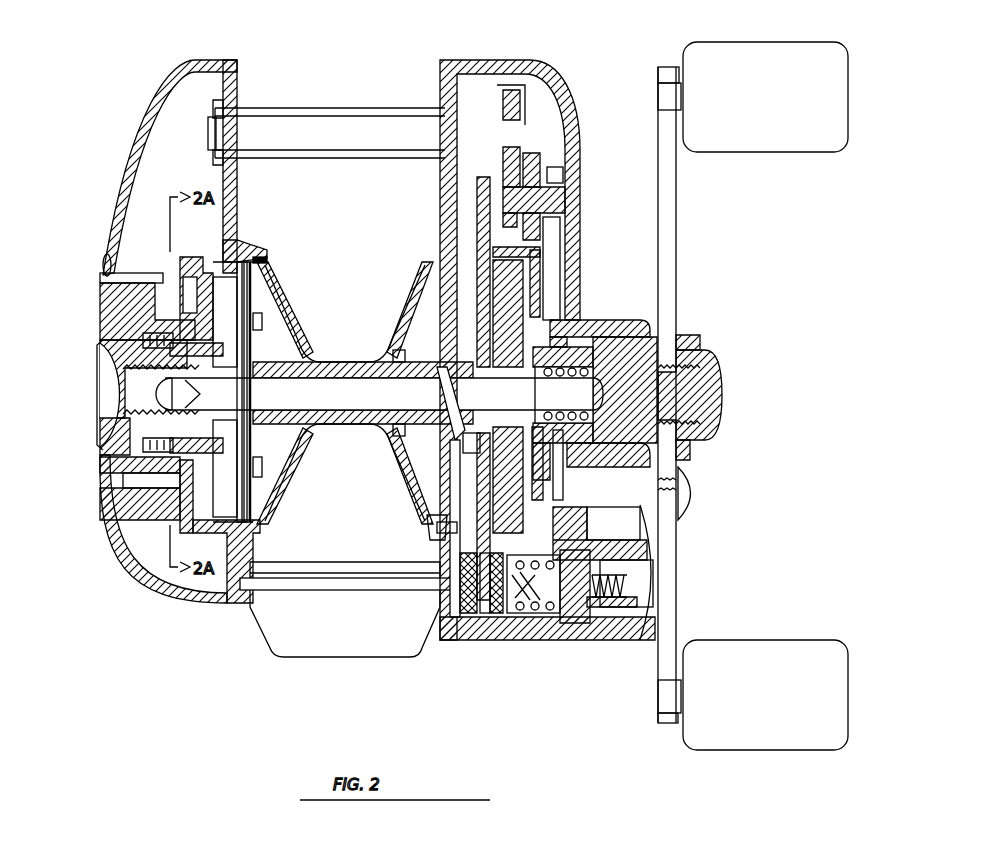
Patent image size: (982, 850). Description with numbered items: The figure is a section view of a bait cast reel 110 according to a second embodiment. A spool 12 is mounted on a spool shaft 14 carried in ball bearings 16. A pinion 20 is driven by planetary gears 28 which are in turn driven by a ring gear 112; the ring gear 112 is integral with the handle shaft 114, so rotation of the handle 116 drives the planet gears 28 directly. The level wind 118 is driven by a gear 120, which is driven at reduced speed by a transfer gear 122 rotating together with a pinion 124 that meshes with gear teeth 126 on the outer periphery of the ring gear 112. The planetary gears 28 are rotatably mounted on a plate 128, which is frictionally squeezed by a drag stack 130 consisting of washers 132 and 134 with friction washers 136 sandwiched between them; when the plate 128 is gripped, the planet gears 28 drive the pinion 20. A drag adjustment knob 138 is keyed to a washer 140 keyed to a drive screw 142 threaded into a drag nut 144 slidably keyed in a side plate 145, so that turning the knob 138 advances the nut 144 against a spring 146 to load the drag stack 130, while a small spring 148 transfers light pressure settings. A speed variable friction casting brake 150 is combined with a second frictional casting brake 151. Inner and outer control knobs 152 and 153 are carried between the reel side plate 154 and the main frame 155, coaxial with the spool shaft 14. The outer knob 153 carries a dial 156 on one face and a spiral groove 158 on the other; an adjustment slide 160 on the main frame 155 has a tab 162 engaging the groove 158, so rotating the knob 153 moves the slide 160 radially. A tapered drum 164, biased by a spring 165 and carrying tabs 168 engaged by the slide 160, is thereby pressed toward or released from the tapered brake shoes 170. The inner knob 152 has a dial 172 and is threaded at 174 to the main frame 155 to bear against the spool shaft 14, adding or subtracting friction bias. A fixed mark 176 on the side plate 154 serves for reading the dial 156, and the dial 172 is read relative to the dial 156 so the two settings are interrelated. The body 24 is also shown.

The bait cast reel 110 is at (205, 618).
The ring gear 112 is at (548, 248).
The handle shaft 114 is at (659, 343).
The handle 116 is at (667, 580).
The level wind 118 is at (322, 110).
The gear 120 is at (520, 92).
The transfer gear 122 is at (503, 222).
The pinion 124 is at (532, 168).
The gear teeth 126 is at (500, 245).
The plate 128 is at (433, 528).
The drag stack 130 is at (472, 642).
The washer 132 is at (442, 630).
The washer 134 is at (492, 630).
The friction washers 136 is at (478, 618).
The drag adjustment knob 138 is at (609, 650).
The washer 140 is at (640, 625).
The drive screw 142 is at (640, 600).
The drag nut 144 is at (565, 640).
The side plate 145 is at (575, 655).
The spring 146 is at (532, 640).
The small spring 148 is at (545, 632).
The speed variable friction casting brake 150 is at (170, 556).
The second frictional casting brake 151 is at (83, 424).
The inner control knob 152 is at (100, 405).
The outer control knob 153 is at (115, 316).
The reel side plate 154 is at (120, 196).
The main frame 155 is at (240, 190).
The dial 156 is at (103, 300).
The spiral groove 158 is at (196, 287).
The adjustment slide 160 is at (245, 258).
The tab 162 is at (205, 272).
The tapered drum 164 is at (172, 443).
The spring 165 is at (163, 445).
The tabs 168 is at (182, 450).
The tapered brake shoes 170 is at (252, 310).
The dial 172 is at (107, 348).
The threaded portion 174 is at (190, 410).
The fixed mark 176 is at (105, 268).
The spool 12 is at (303, 433).
The spool shaft 14 is at (338, 388).
The ball bearings 16 is at (213, 368).
The pinion 20 is at (455, 428).
The main body 24 is at (578, 428).
The planetary gears 28 is at (510, 290).